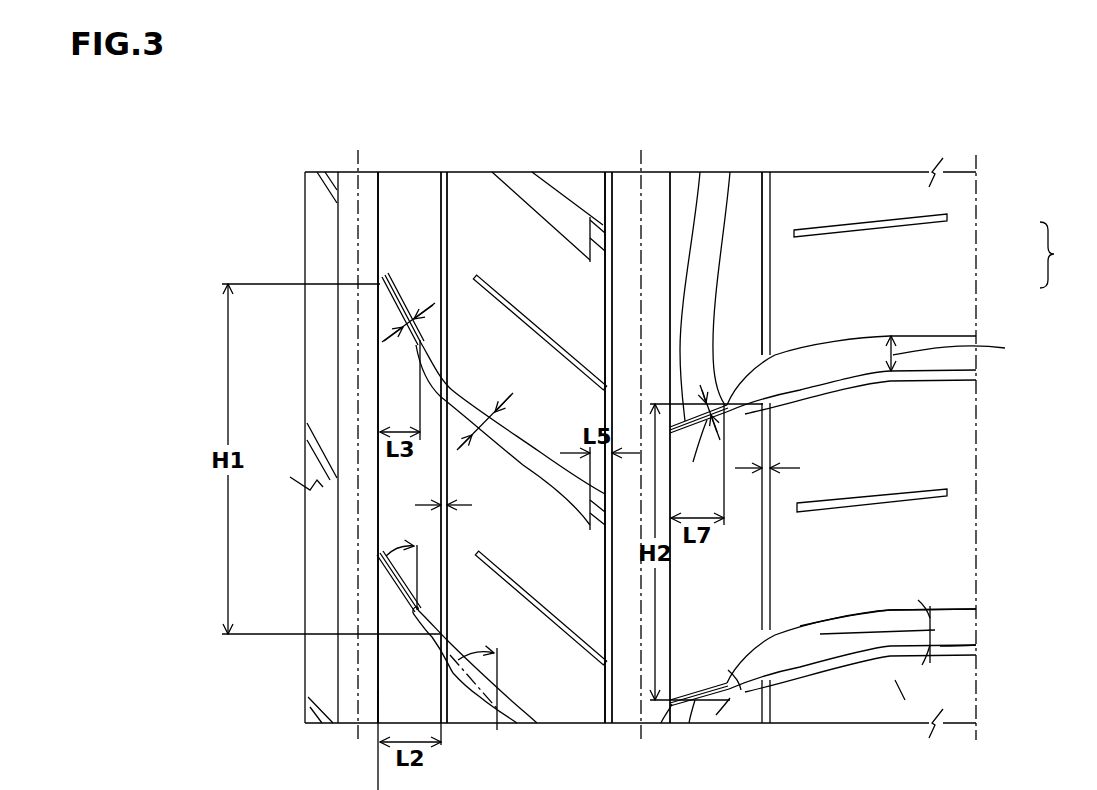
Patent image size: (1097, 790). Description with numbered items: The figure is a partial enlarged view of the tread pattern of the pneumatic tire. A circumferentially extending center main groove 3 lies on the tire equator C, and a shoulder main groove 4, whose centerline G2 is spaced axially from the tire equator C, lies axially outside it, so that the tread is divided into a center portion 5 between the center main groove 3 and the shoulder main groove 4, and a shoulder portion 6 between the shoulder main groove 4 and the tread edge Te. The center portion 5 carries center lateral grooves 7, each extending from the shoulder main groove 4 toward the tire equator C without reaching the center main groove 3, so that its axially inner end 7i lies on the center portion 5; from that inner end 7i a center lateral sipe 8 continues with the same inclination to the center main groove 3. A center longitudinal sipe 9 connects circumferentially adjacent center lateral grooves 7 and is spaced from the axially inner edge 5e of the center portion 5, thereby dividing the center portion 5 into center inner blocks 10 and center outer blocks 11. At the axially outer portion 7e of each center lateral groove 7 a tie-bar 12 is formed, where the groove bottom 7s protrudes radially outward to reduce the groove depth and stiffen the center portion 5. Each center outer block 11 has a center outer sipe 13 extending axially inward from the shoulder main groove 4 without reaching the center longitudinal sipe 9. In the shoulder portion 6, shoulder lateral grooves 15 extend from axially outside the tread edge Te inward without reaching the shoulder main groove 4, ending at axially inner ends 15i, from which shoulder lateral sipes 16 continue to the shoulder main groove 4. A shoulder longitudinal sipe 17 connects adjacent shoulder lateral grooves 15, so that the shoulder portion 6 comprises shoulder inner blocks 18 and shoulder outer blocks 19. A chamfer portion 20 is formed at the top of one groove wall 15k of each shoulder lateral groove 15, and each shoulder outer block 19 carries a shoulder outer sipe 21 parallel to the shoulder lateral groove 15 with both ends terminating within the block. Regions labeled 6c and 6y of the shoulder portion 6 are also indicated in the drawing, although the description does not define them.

The center main groove 3 is at (338, 172).
The shoulder main groove 4 is at (669, 176).
The center portion 5 is at (400, 128).
The axially inner edge of the center portion 5e is at (372, 705).
The shoulder portion 6 is at (834, 196).
The shoulder land portion region 6c is at (903, 690).
The shoulder land edge portion 6y is at (953, 647).
The center lateral groove 7 is at (493, 712).
The axially inner end of the center lateral groove 7i is at (430, 616).
The axially outer portion of the center lateral groove 7e is at (612, 207).
The groove bottom 7s is at (600, 225).
The center lateral sipe 8 is at (388, 277).
The center longitudinal sipe 9 is at (443, 236).
The center inner block 10 is at (418, 200).
The center outer block 11 is at (473, 200).
The tie-bar 12 is at (612, 305).
The center outer sipe 13 is at (495, 296).
The shoulder lateral groove 15 is at (810, 366).
The axially inner end of the shoulder lateral groove 15i is at (733, 177).
The groove wall 15k is at (935, 613).
The shoulder lateral sipe 16 is at (704, 180).
The shoulder longitudinal sipe 17 is at (779, 177).
The shoulder inner block 18 is at (745, 260).
The shoulder outer block 19 is at (910, 240).
The chamfer portion 20 is at (925, 376).
The shoulder outer sipe 21 is at (877, 494).
The tire equator C is at (358, 172).
The centerline of the shoulder main groove G2 is at (641, 172).
The tread edge Te is at (979, 172).